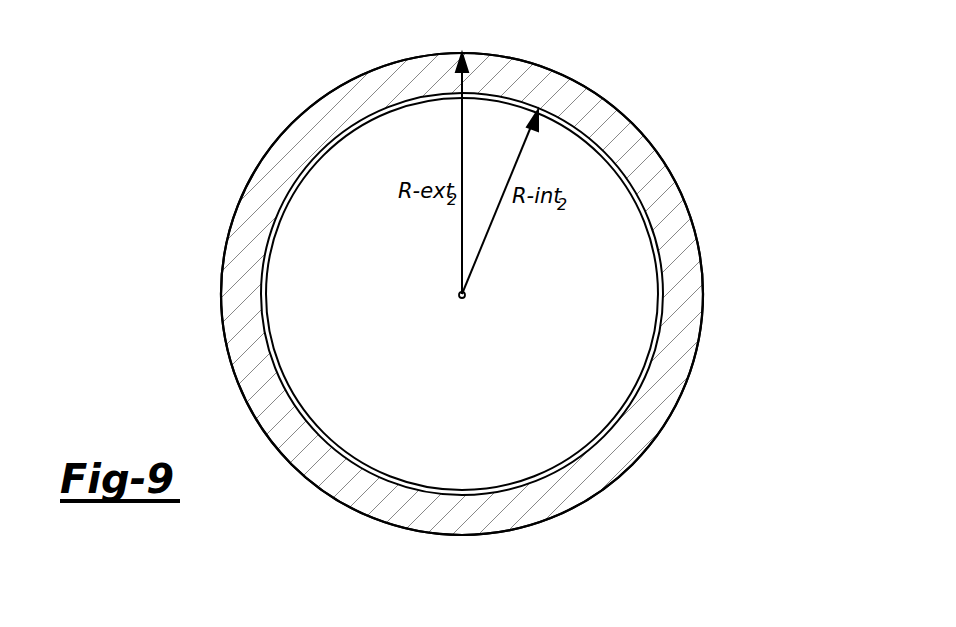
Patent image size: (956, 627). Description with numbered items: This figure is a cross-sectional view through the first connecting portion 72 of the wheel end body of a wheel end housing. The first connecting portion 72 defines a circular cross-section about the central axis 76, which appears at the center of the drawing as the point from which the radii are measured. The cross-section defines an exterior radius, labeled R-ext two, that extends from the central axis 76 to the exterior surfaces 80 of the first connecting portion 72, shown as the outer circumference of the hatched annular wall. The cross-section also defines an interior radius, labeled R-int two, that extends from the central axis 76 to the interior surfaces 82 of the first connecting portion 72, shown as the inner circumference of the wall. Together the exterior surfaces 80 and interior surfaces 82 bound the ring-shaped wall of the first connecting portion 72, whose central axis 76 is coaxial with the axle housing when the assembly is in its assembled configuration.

The first connecting portion 72 is at (259, 168).
The exterior surfaces 80 is at (398, 62).
The interior surfaces 82 is at (640, 208).
The central axis 76 is at (460, 296).